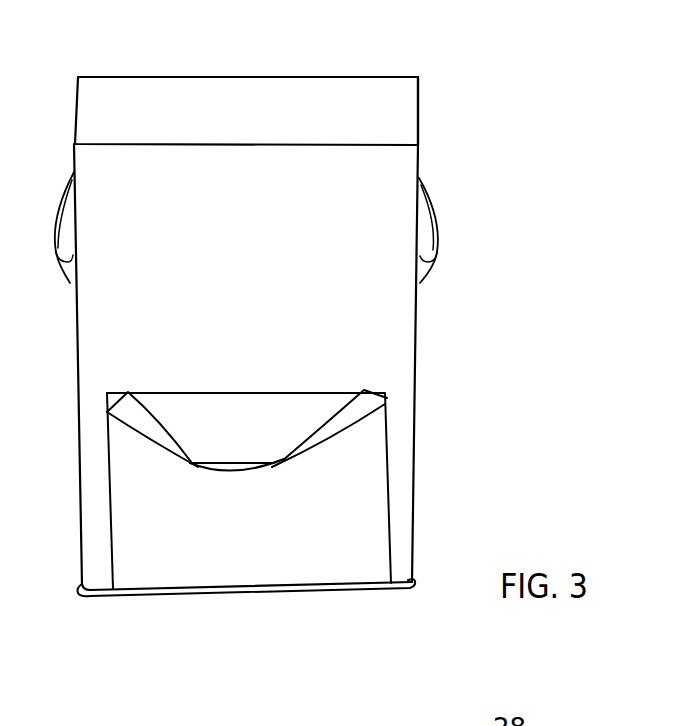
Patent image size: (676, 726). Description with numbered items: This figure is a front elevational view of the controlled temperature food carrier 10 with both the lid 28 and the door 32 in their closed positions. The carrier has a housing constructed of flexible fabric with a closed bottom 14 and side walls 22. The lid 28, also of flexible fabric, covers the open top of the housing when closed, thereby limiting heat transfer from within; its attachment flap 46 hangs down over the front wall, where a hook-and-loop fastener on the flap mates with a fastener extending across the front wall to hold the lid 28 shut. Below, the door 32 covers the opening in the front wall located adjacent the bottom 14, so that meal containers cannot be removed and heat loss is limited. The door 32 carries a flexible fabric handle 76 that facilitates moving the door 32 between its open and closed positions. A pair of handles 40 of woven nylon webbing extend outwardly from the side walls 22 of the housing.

The controlled temperature food carrier 10 is at (291, 320).
The closed bottom 14 is at (343, 597).
The side walls 22 is at (420, 329).
The lid 28 is at (176, 70).
The door 32 is at (402, 487).
The handles 40 is at (433, 227).
The attachment flap 46 is at (407, 118).
The flexible fabric handle 76 is at (365, 410).